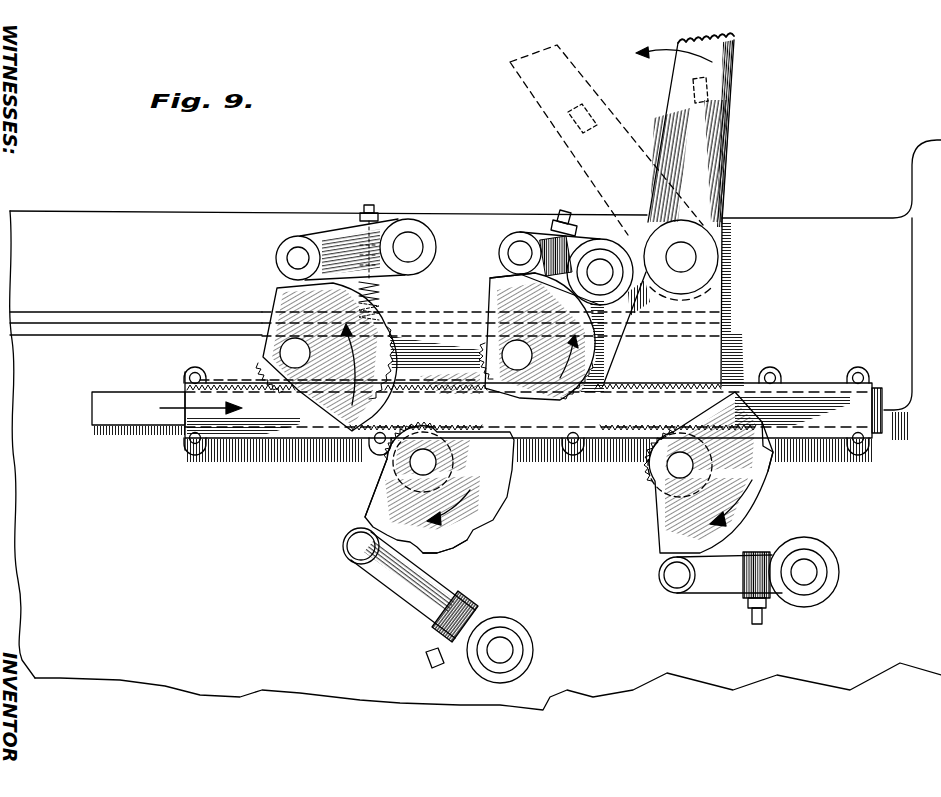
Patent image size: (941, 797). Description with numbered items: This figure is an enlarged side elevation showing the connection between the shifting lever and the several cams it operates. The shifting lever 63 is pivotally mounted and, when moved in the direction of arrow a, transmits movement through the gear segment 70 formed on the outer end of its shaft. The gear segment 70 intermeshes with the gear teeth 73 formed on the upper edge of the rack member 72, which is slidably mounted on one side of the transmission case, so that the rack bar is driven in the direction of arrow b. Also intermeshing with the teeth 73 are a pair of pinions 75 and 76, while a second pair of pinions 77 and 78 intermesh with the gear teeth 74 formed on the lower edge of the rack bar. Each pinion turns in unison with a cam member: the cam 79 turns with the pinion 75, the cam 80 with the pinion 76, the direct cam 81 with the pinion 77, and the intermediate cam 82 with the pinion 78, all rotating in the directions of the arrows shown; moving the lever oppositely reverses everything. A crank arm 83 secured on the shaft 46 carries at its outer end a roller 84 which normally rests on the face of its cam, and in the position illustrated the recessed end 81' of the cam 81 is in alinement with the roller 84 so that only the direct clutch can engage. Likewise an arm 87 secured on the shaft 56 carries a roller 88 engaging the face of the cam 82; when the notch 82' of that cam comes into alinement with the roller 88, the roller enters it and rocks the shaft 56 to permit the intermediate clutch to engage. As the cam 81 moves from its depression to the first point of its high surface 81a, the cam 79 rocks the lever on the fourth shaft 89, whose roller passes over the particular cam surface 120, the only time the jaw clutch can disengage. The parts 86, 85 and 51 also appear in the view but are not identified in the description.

The cam surface 120 is at (288, 242).
The fourth shaft 89 is at (414, 232).
The cam 79 is at (376, 313).
The cam 80 is at (496, 300).
The pinion 75 is at (266, 346).
The gear teeth 73 is at (234, 390).
The rack member 72 is at (114, 413).
The gear teeth 74 is at (292, 448).
The pinion 76 is at (488, 360).
The pivot of lever 86 is at (516, 232).
The adjusting bolt 85 is at (547, 228).
The roller 51 is at (603, 275).
The shifting lever 63 is at (725, 153).
The gear segment 70 is at (722, 360).
The pinion 77 is at (388, 455).
The direct cam 81 is at (455, 489).
The recessed end 81' is at (347, 495).
The high surface 81a is at (440, 556).
The roller 84 is at (346, 550).
The crank arm 83 is at (406, 598).
The shaft 46 is at (506, 652).
The pinion 78 is at (650, 478).
The intermediate cam 82 is at (683, 472).
The notch 82' is at (790, 453).
The roller 88 is at (688, 598).
The arm 87 is at (720, 587).
The shaft 56 is at (808, 570).
The arrow a is at (731, 63).
The arrow b is at (185, 411).